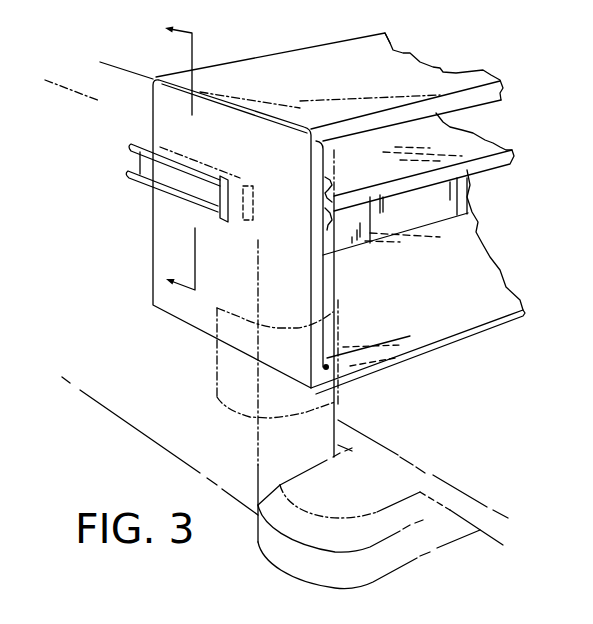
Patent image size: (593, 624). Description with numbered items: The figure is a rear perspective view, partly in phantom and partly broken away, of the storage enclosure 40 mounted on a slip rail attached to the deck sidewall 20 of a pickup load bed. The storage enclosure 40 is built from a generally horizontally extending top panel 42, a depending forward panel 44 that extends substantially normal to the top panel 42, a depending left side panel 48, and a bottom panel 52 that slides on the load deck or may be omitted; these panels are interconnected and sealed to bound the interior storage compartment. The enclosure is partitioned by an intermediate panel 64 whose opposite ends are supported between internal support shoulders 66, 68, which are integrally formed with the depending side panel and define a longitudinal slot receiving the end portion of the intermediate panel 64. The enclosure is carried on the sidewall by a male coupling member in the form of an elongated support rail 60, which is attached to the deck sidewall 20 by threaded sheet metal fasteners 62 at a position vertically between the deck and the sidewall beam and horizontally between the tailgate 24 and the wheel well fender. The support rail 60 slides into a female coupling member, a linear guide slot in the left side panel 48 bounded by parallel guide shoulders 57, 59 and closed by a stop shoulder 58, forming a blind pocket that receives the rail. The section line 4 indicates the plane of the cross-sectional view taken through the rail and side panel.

The section line 4 is at (166, 149).
The deck sidewall 20 is at (183, 428).
The tailgate 24 is at (413, 450).
The storage enclosure 40 is at (415, 42).
The top panel 42 is at (348, 80).
The depending forward panel 44 is at (440, 193).
The depending left side panel 48 is at (233, 280).
The bottom panel 52 is at (477, 280).
The guide shoulder 57 is at (220, 182).
The stop shoulder 58 is at (245, 200).
The guide shoulder 59 is at (249, 349).
The support rail 60 is at (135, 158).
The threaded sheet metal fastener 62 is at (152, 168).
The intermediate panel 64 is at (471, 147).
The internal support shoulder 66 is at (328, 212).
The internal support shoulder 68 is at (330, 192).